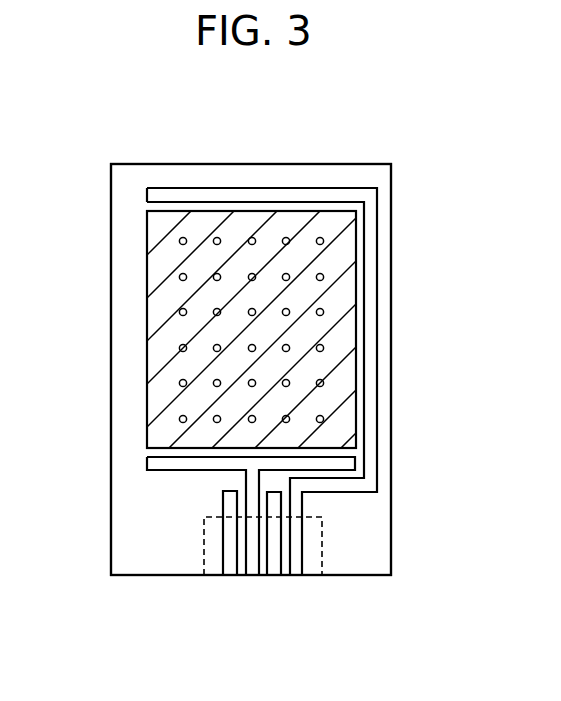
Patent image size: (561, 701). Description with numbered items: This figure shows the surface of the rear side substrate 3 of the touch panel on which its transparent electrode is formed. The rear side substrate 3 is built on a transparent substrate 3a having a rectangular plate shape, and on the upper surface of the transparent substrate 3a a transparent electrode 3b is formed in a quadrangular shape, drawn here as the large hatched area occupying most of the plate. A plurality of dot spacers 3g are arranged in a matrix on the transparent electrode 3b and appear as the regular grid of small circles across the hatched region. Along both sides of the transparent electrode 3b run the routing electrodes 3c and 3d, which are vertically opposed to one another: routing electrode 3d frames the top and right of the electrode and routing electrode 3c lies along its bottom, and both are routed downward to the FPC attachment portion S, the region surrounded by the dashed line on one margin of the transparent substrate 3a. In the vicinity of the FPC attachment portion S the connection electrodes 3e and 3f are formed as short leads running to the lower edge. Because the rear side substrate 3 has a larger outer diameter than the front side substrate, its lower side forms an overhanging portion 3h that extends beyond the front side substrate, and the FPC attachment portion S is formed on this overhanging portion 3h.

The rear side substrate 3 is at (328, 150).
The transparent substrate 3a is at (380, 179).
The transparent electrode 3b is at (202, 256).
The routing electrode 3c is at (197, 461).
The routing electrode 3d is at (370, 280).
The connection electrode 3e is at (232, 562).
The connection electrode 3f is at (275, 562).
The dot spacers 3g is at (324, 348).
The overhanging portion 3h is at (353, 527).
The FPC attachment portion S is at (322, 535).